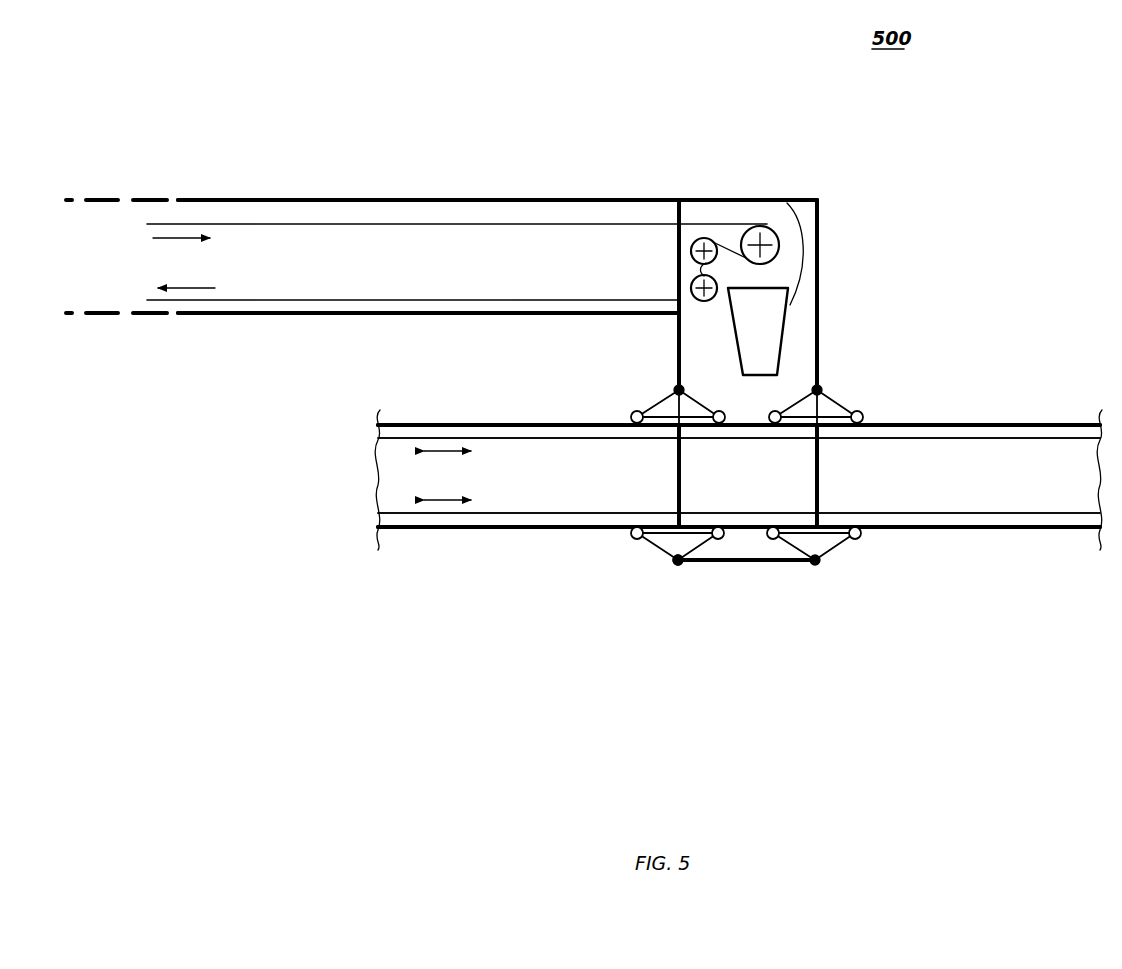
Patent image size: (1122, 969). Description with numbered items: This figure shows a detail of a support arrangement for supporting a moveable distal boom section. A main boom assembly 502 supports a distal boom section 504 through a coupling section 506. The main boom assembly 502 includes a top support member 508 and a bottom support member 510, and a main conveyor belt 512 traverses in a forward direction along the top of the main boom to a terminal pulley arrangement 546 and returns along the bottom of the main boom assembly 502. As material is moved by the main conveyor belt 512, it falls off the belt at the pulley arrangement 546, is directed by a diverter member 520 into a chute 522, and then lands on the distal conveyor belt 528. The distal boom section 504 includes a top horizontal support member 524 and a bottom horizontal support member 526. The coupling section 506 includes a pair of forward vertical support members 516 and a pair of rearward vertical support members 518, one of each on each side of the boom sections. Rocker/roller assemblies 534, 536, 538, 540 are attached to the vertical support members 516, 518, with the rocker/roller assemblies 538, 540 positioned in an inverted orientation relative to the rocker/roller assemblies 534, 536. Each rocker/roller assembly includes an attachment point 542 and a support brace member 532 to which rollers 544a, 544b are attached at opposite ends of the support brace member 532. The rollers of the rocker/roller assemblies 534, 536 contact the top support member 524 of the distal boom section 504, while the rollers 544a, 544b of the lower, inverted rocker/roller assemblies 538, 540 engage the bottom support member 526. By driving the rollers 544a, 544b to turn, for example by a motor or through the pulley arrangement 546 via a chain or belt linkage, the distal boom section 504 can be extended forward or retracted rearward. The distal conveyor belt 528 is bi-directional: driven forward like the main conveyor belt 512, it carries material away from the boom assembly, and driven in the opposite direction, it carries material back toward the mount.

The main boom assembly 502 is at (295, 168).
The distal boom section 504 is at (509, 552).
The coupling section 506 is at (743, 166).
The top support member 508 is at (432, 198).
The bottom support member 510 is at (278, 316).
The main conveyor belt 512 is at (553, 222).
The forward vertical support members 516 is at (817, 337).
The rearward vertical support members 518 is at (679, 340).
The diverter member 520 is at (803, 238).
The chute 522 is at (790, 312).
The top horizontal support member 524 is at (485, 420).
The bottom horizontal support member 526 is at (995, 530).
The distal conveyor belt 528 is at (1033, 437).
The lower bracket bar 532 is at (753, 561).
The rocker/roller assembly 534 is at (860, 398).
The rocker/roller assembly 536 is at (658, 403).
The rocker/roller assembly 538 is at (660, 550).
The rocker/roller assembly 540 is at (848, 540).
The attachment point 542 is at (680, 565).
The roller 544a is at (622, 540).
The roller 544b is at (717, 545).
The terminal pulley arrangement 546 is at (759, 205).